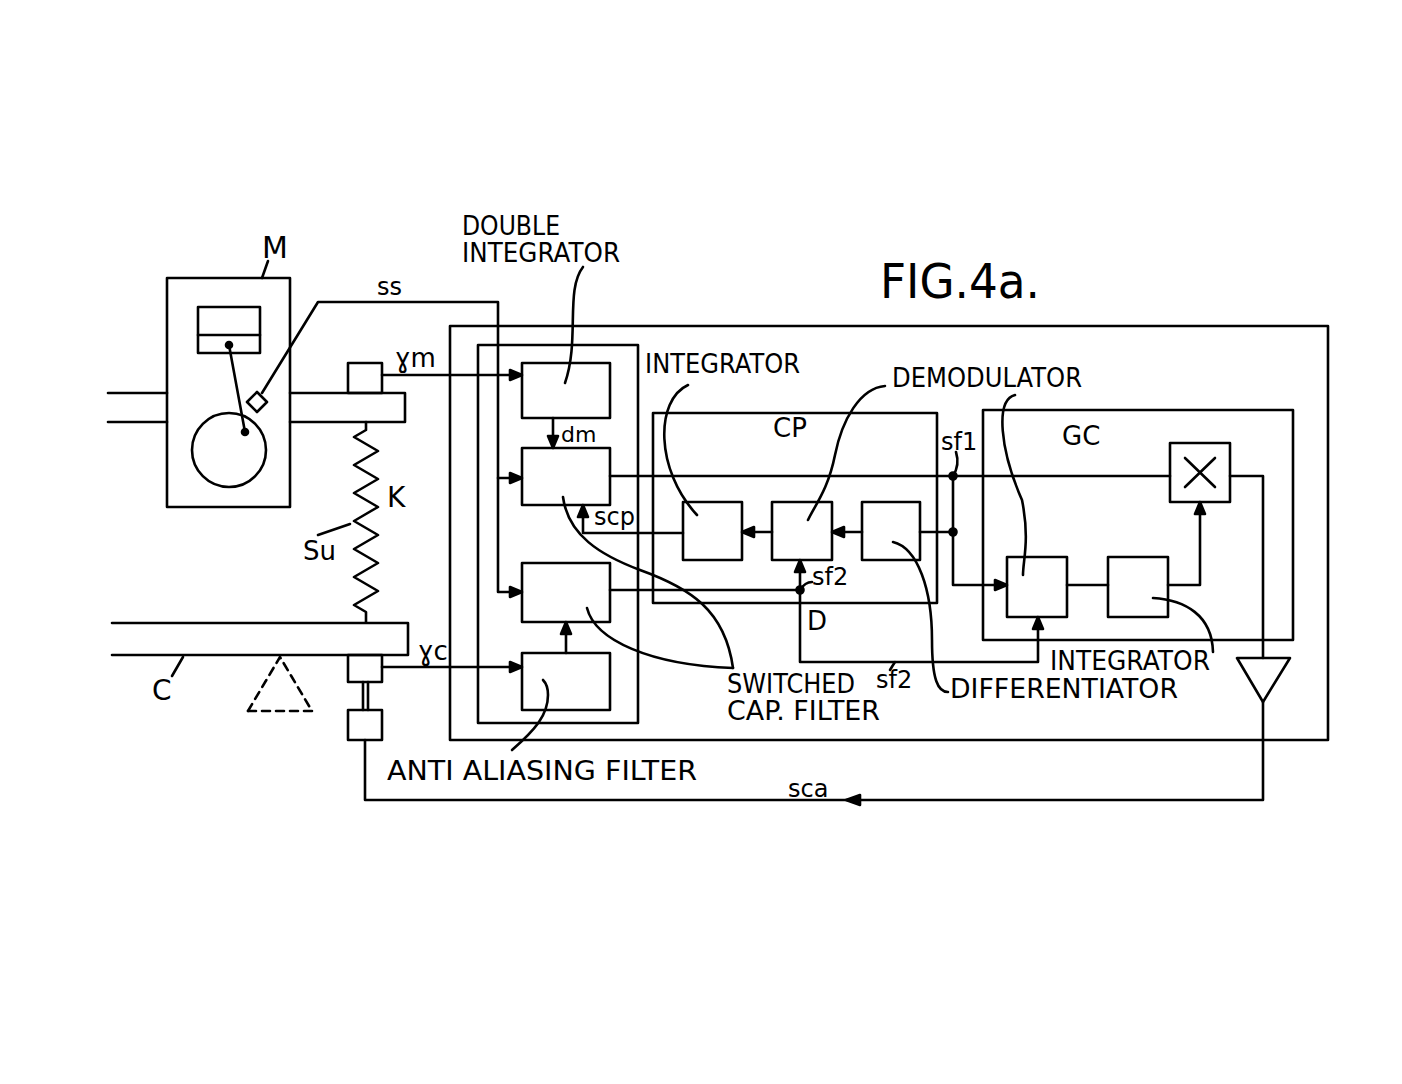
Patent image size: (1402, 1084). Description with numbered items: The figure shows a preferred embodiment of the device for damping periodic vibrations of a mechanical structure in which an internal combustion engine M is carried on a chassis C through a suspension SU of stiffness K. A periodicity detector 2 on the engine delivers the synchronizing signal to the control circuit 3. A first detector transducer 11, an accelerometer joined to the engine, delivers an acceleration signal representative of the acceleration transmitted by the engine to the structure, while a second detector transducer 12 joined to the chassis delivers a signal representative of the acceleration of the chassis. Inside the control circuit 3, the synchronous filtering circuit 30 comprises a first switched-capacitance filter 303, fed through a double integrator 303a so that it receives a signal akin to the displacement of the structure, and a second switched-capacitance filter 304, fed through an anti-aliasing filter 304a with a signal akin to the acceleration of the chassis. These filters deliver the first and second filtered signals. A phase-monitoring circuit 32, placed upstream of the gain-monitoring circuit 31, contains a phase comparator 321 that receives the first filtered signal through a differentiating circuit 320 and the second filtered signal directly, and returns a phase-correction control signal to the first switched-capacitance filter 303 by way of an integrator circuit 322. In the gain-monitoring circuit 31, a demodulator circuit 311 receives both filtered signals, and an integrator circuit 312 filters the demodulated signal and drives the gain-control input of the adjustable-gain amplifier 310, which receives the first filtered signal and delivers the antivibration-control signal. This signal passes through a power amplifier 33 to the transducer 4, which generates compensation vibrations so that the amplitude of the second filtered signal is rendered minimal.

The detector of the periodicity of the vibrations 2 is at (252, 398).
The control circuit 3 is at (1143, 325).
The transducer generating compensation vibrations 4 is at (355, 727).
The first detector transducer 11 is at (367, 372).
The second detector transducer 12 is at (370, 672).
The synchronous filtering circuit 30 is at (558, 352).
The gain-monitoring circuit 31 is at (1248, 410).
The phase-monitoring circuit 32 is at (830, 413).
The power amplifier 33 is at (1285, 675).
The first switched-capacitance filter 303 is at (540, 507).
The double integrator 303a is at (587, 363).
The second switched-capacitance filter 304 is at (610, 605).
The anti-aliasing filter 304a is at (610, 690).
The adjustable-gain amplifier 310 is at (1232, 453).
The demodulator circuit 311 is at (1050, 557).
The integrator circuit 312 is at (1140, 557).
The differentiating circuit 320 is at (877, 502).
The phase comparator 321 is at (788, 502).
The integrator circuit 322 is at (697, 515).